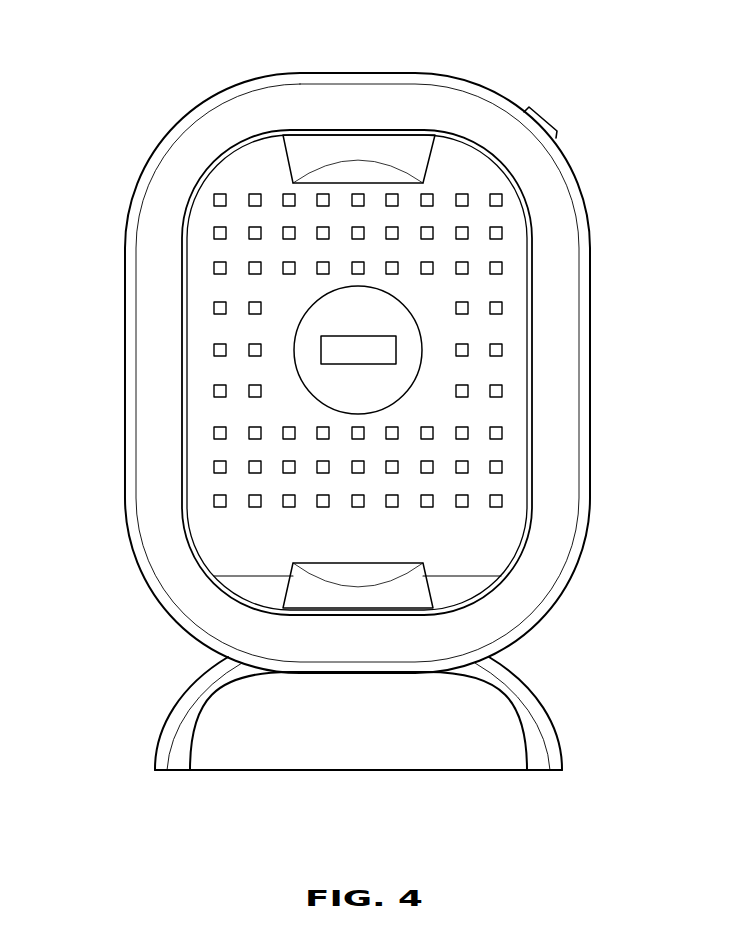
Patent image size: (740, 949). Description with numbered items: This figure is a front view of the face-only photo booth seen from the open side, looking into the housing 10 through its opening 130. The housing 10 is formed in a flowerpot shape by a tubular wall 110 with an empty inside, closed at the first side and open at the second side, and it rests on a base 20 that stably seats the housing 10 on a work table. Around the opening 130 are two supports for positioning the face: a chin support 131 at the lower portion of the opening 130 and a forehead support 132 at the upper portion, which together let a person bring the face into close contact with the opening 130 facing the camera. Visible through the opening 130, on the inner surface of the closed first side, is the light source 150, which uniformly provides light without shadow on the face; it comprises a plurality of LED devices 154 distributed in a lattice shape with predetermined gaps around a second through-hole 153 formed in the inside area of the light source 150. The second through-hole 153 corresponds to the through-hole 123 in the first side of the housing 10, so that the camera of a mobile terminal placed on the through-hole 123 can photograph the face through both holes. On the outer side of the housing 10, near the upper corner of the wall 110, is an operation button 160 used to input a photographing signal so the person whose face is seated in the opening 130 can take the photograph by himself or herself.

The housing 10 is at (184, 125).
The base 20 is at (465, 740).
The wall 110 is at (530, 163).
The through-hole 123 is at (367, 351).
The opening 130 is at (451, 563).
The chin support 131 is at (420, 592).
The forehead support 132 is at (353, 145).
The light source 150 is at (222, 453).
The second through-hole 153 is at (294, 331).
The LED devices 154 is at (503, 391).
The operation button 160 is at (543, 121).